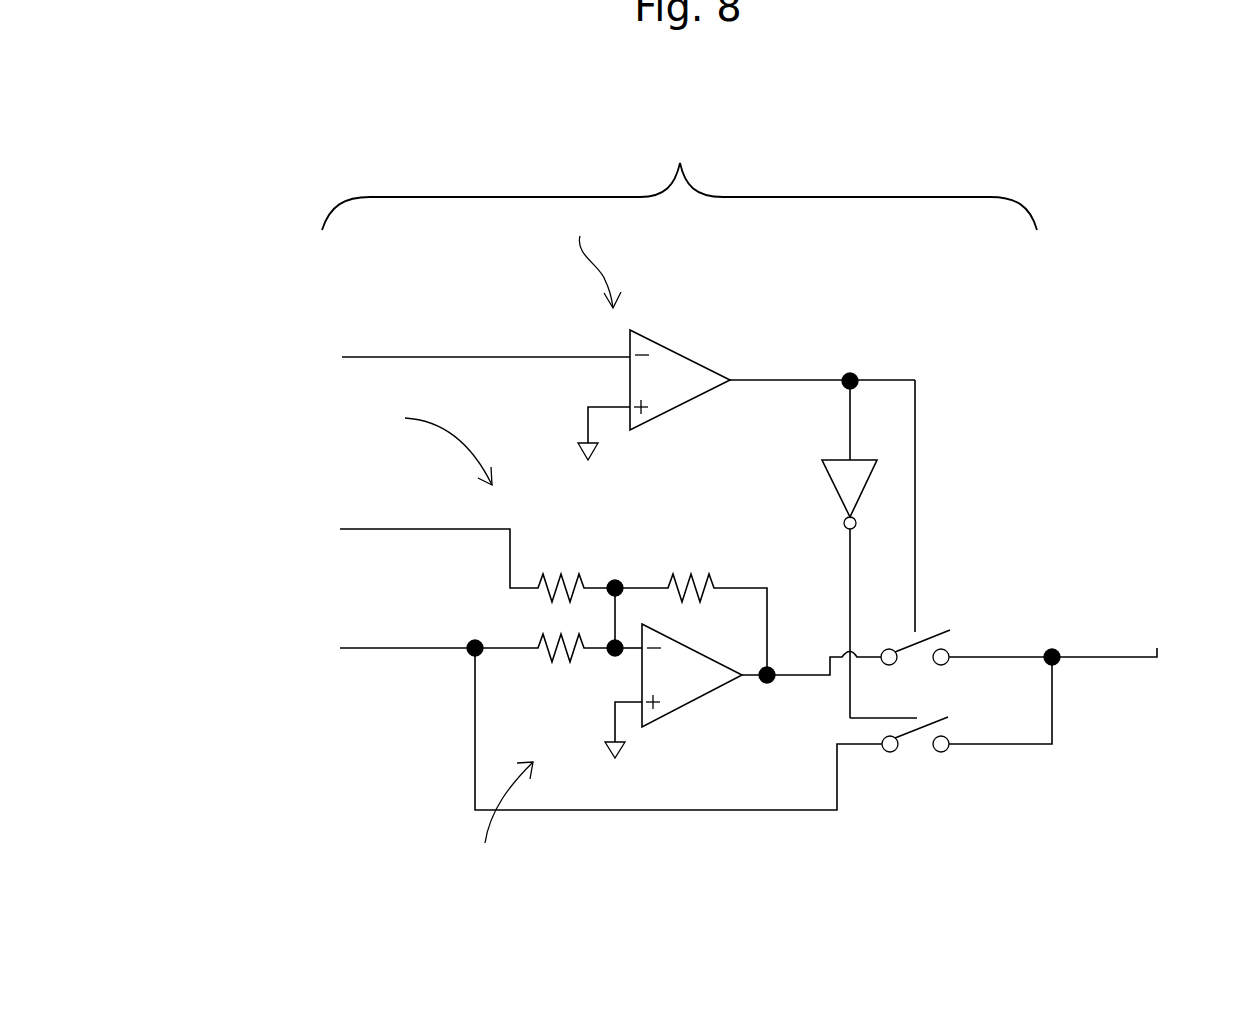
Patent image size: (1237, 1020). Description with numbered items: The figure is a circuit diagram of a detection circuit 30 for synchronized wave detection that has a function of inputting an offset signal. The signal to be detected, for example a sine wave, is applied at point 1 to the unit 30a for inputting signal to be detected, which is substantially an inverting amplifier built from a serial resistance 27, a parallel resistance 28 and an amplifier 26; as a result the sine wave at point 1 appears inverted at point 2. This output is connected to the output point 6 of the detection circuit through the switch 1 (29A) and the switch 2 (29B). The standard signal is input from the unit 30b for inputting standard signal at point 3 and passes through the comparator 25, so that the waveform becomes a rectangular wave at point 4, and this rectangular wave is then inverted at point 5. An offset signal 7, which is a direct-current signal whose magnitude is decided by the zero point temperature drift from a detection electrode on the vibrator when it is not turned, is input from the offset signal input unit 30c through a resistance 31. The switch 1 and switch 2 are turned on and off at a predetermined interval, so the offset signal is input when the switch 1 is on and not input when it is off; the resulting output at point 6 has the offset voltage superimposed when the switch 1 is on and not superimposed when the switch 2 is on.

The detection circuit 30 is at (679, 180).
The unit for inputting signal to be detected 30a is at (495, 818).
The unit for inputting standard signal 30b is at (591, 256).
The offset signal input unit 30c is at (421, 441).
The point 1 is at (370, 648).
The point 2 is at (767, 625).
The point 3 is at (553, 357).
The point 4 is at (783, 380).
The point 5 is at (852, 543).
The output point 6 is at (1054, 650).
The offset signal 7 is at (372, 530).
The comparator 25 is at (672, 363).
The amplifier 26 is at (706, 685).
The serial resistance 27 is at (548, 662).
The parallel resistance 28 is at (697, 576).
The switch 1 29A is at (922, 637).
The switch 2 29B is at (917, 730).
The resistance 31 is at (570, 576).